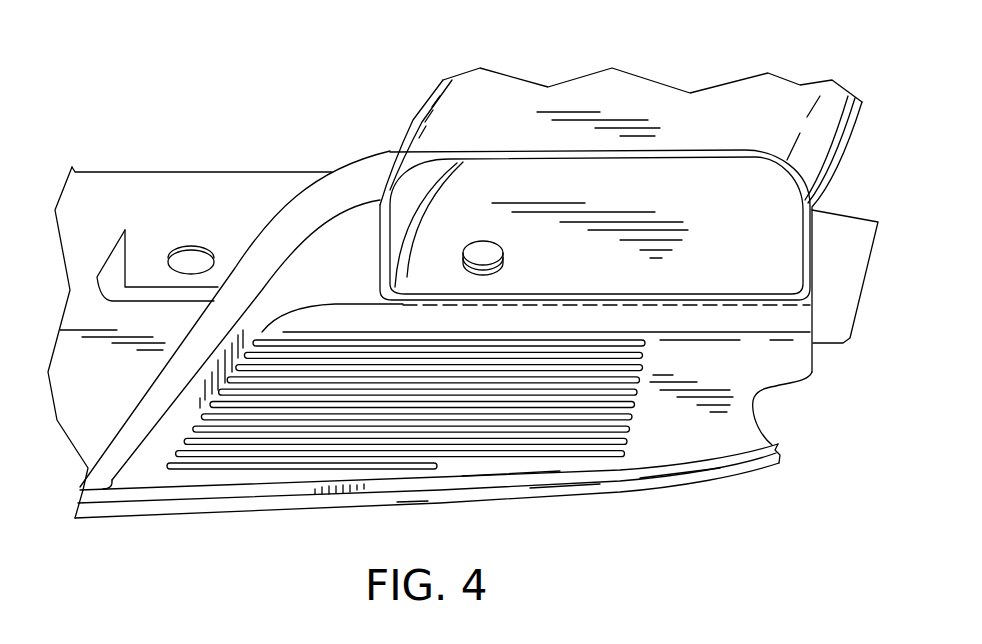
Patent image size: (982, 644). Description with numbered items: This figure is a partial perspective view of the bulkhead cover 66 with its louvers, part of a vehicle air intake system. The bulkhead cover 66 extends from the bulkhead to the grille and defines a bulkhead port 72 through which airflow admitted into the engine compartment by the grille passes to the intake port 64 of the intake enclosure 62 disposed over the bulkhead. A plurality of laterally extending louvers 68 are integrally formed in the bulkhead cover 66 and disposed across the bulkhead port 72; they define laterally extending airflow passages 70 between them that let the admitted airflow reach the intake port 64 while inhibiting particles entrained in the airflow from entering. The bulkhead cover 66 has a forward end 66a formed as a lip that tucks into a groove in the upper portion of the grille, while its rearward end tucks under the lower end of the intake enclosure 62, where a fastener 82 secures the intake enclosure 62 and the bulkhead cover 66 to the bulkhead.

The intake enclosure 62 is at (692, 105).
The intake port 64 is at (550, 158).
The bulkhead cover 66 is at (756, 402).
The forward end 66a is at (688, 473).
The louvers 68 is at (406, 411).
The airflow passages 70 is at (287, 455).
The bulkhead port 72 is at (522, 433).
The fastener 82 is at (490, 248).